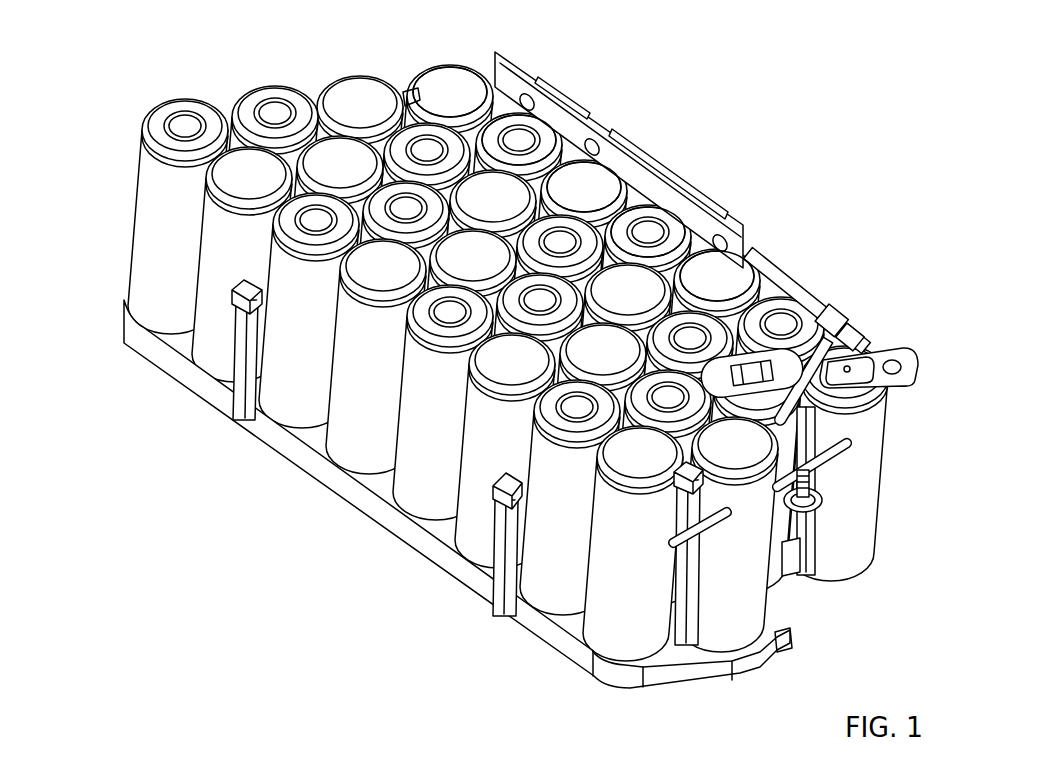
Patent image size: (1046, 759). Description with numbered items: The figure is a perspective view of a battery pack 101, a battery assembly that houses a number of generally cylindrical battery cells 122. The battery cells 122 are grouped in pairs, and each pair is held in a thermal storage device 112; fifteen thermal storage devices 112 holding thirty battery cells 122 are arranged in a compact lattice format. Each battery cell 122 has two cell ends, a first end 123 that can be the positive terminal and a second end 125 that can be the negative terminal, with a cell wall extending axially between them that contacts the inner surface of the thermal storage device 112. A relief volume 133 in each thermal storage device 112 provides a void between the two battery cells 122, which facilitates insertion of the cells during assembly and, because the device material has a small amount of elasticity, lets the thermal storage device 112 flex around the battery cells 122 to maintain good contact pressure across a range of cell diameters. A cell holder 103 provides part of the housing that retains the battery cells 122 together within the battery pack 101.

The battery pack 101 is at (498, 344).
The cell holder 103 is at (268, 425).
The thermal storage device 112 is at (143, 252).
The battery cell 122 is at (460, 93).
The first end 123 is at (673, 223).
The second end 125 is at (735, 280).
The relief volume 133 is at (418, 85).